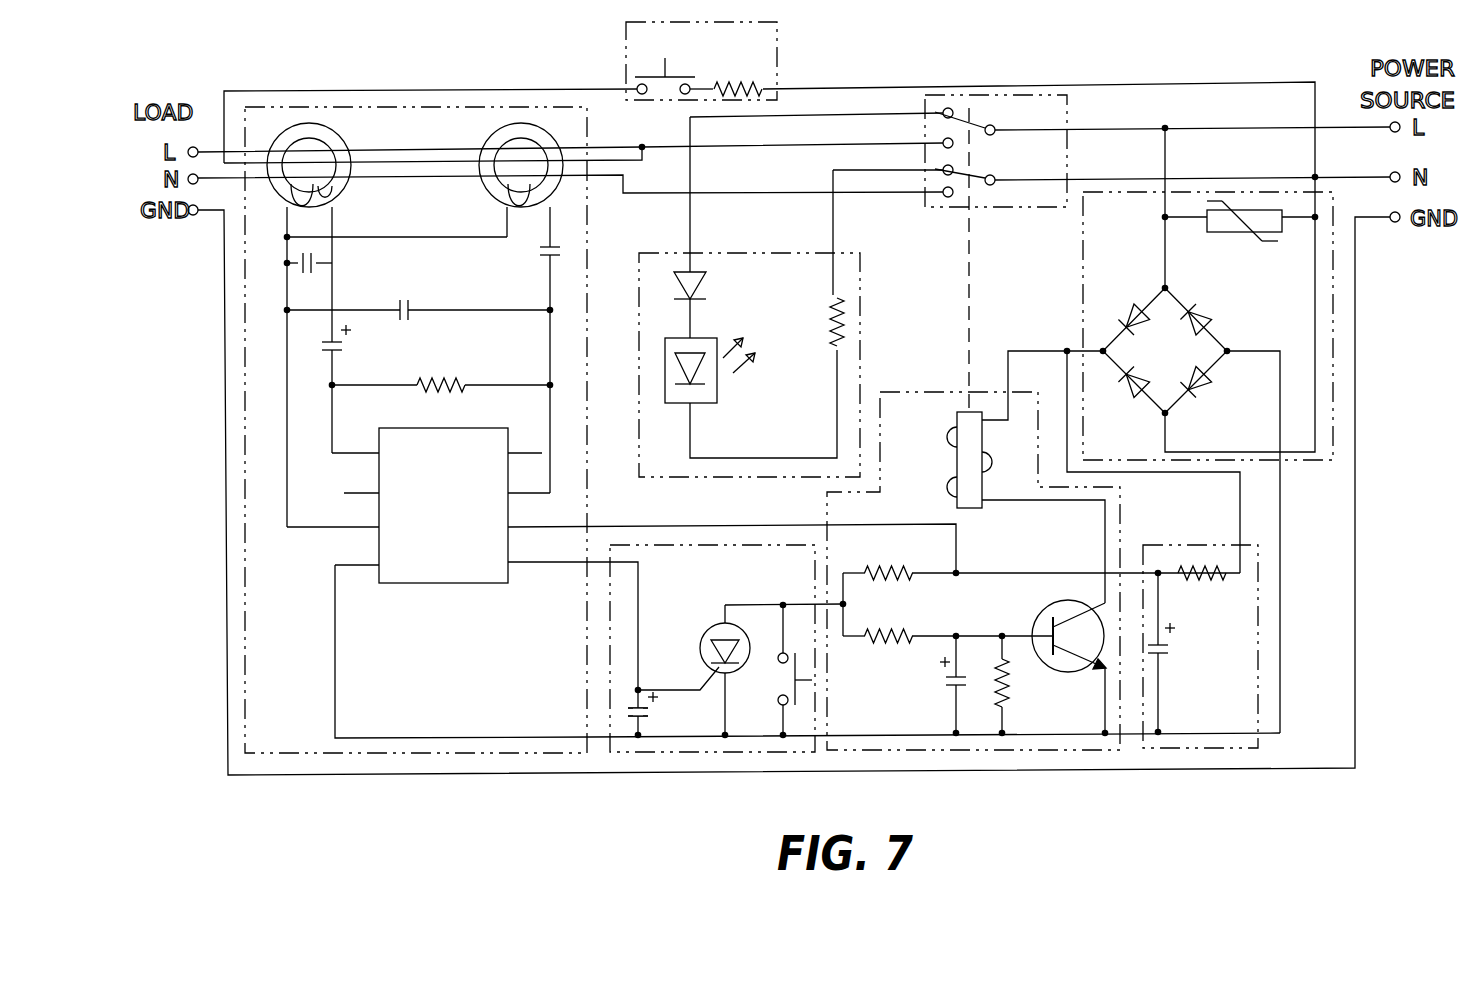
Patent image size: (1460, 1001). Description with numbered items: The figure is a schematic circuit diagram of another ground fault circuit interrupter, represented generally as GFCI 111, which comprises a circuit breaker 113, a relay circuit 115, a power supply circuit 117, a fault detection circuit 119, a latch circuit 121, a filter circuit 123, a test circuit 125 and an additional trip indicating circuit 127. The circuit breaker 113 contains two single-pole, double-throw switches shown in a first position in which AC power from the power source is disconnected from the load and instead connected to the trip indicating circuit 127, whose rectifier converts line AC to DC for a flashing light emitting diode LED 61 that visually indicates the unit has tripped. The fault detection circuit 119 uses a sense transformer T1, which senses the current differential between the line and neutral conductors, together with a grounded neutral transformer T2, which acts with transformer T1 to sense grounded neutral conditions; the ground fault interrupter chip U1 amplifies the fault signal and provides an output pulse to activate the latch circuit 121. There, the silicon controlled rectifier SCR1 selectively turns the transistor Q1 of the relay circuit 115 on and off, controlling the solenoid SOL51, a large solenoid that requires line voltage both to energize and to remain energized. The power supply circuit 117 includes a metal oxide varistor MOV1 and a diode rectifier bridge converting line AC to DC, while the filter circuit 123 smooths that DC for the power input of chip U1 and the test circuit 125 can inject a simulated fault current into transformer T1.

The ground fault circuit interrupter 111 is at (336, 799).
The circuit breaker 113 is at (1067, 97).
The relay circuit 115 is at (855, 752).
The power supply circuit 117 is at (1313, 462).
The fault detection circuit 119 is at (480, 754).
The latch circuit 121 is at (650, 754).
The filter circuit 123 is at (1258, 679).
The test circuit 125 is at (777, 56).
The trip indicating circuit 127 is at (860, 302).
The flashing light emitting diode 61 is at (751, 398).
The sense transformer T1 is at (313, 227).
The grounded neutral transformer T2 is at (526, 174).
The ground fault interrupter chip U1 is at (783, 583).
The solenoid SOL51 is at (996, 507).
The transistor Q1 is at (1070, 654).
The silicon controlled rectifier SCR1 is at (740, 670).
The metal oxide varistor MOV1 is at (1240, 234).